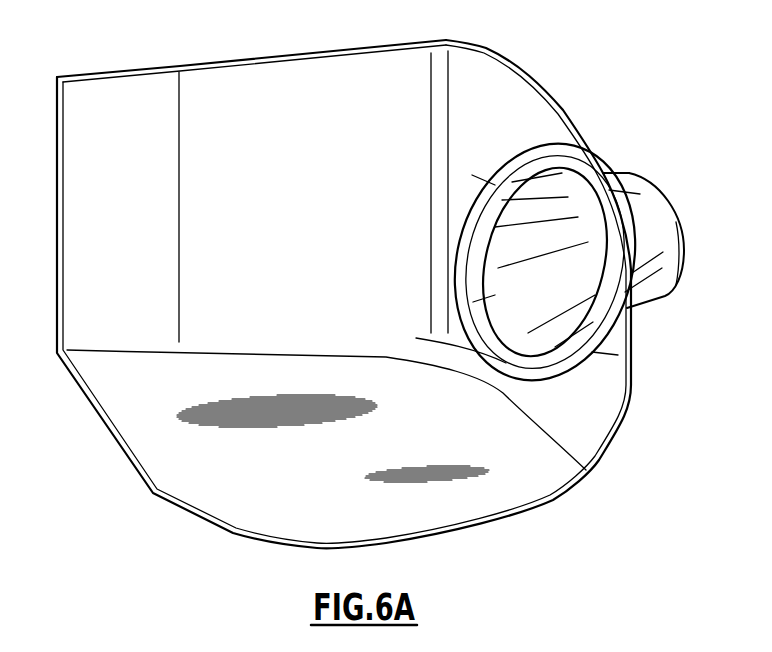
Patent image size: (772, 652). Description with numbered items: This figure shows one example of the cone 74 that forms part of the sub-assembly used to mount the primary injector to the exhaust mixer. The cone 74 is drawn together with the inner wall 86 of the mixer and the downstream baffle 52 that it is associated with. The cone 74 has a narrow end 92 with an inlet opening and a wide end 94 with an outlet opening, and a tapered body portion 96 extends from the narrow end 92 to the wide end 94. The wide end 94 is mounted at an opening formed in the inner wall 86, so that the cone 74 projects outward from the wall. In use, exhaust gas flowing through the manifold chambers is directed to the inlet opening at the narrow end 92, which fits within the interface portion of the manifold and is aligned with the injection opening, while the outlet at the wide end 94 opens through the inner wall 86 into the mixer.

The downstream baffle 52 is at (485, 495).
The inner wall 86 is at (217, 82).
The tapered body portion 96 is at (605, 174).
The wide end 94 is at (528, 352).
The cone 74 is at (650, 233).
The narrow end 92 is at (660, 284).